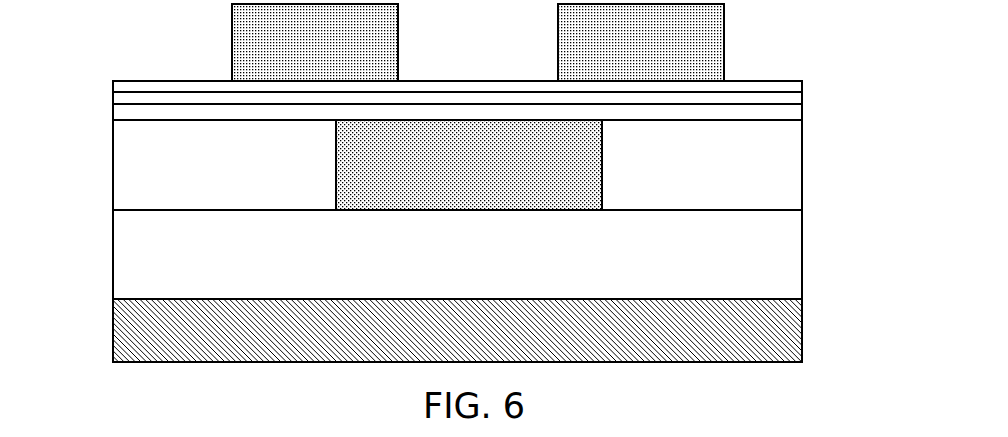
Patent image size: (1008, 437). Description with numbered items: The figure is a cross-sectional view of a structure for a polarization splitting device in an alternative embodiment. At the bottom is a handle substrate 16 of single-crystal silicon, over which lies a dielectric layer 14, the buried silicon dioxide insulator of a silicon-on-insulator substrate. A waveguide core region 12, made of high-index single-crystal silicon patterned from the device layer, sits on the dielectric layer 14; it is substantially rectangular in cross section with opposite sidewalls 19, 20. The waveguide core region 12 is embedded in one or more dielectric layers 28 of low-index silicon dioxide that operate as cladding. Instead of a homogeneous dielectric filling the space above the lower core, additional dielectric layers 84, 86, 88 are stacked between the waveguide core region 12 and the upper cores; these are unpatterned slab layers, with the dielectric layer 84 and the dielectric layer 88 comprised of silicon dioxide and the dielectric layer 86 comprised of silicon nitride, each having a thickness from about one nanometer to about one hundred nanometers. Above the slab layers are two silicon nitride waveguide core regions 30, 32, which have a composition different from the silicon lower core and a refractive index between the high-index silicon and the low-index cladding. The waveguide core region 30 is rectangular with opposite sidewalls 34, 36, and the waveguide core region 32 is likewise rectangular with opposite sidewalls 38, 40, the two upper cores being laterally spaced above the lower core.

The waveguide core region 12 is at (405, 148).
The dielectric layer 14 is at (782, 269).
The handle substrate 16 is at (782, 328).
The sidewall 19 is at (336, 175).
The sidewall 20 is at (602, 160).
The dielectric layers 28 is at (780, 144).
The waveguide core region 30 is at (255, 55).
The waveguide core region 32 is at (676, 59).
The sidewall 34 is at (232, 40).
The sidewall 36 is at (398, 57).
The sidewall 38 is at (558, 27).
The sidewall 40 is at (724, 32).
The dielectric layer 84 is at (146, 114).
The dielectric layer 86 is at (790, 99).
The dielectric layer 88 is at (145, 87).